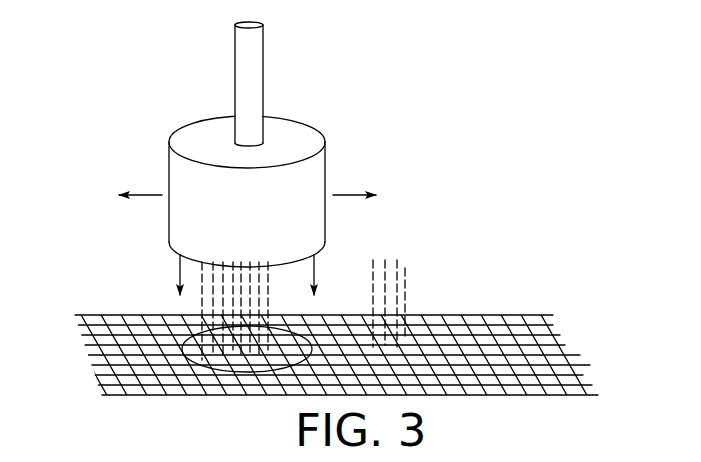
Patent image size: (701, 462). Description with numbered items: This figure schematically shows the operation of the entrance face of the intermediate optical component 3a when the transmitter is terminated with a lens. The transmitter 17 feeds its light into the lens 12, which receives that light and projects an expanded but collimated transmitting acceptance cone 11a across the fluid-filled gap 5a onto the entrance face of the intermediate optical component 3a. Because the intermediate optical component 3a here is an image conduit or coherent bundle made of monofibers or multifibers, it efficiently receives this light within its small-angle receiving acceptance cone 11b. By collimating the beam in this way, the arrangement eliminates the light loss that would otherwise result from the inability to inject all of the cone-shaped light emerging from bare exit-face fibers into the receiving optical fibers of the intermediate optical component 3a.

The shaft 17 is at (260, 92).
The lens 12 is at (263, 226).
The transmitting acceptance cone 11a is at (315, 284).
The receiving acceptance cone 11b is at (405, 300).
The fluid-filled gap 5a is at (572, 242).
The intermediate optical component 3a is at (560, 317).